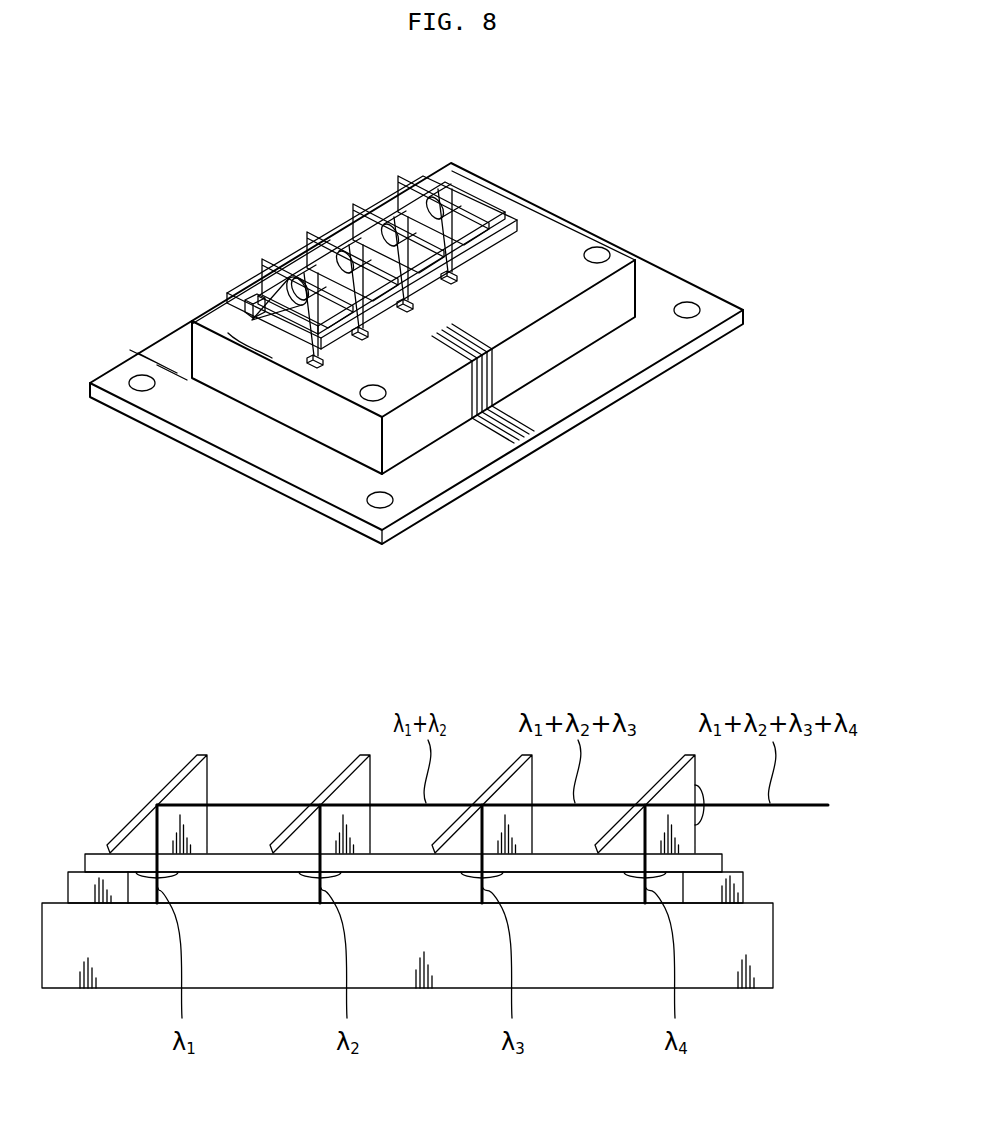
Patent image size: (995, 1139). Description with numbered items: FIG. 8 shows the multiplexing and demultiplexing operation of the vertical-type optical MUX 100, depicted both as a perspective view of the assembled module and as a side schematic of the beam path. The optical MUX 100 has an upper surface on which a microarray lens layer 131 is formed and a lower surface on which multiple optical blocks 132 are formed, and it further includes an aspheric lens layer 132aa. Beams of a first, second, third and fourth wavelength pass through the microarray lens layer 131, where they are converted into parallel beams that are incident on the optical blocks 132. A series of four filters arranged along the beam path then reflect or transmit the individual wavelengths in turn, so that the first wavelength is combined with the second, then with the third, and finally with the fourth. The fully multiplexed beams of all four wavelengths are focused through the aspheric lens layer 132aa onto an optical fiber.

The optical MUX 100 is at (397, 182).
The microarray lens layer 131 is at (143, 880).
The optical blocks 132 is at (197, 828).
The aspheric lens layer 132aa is at (255, 266).